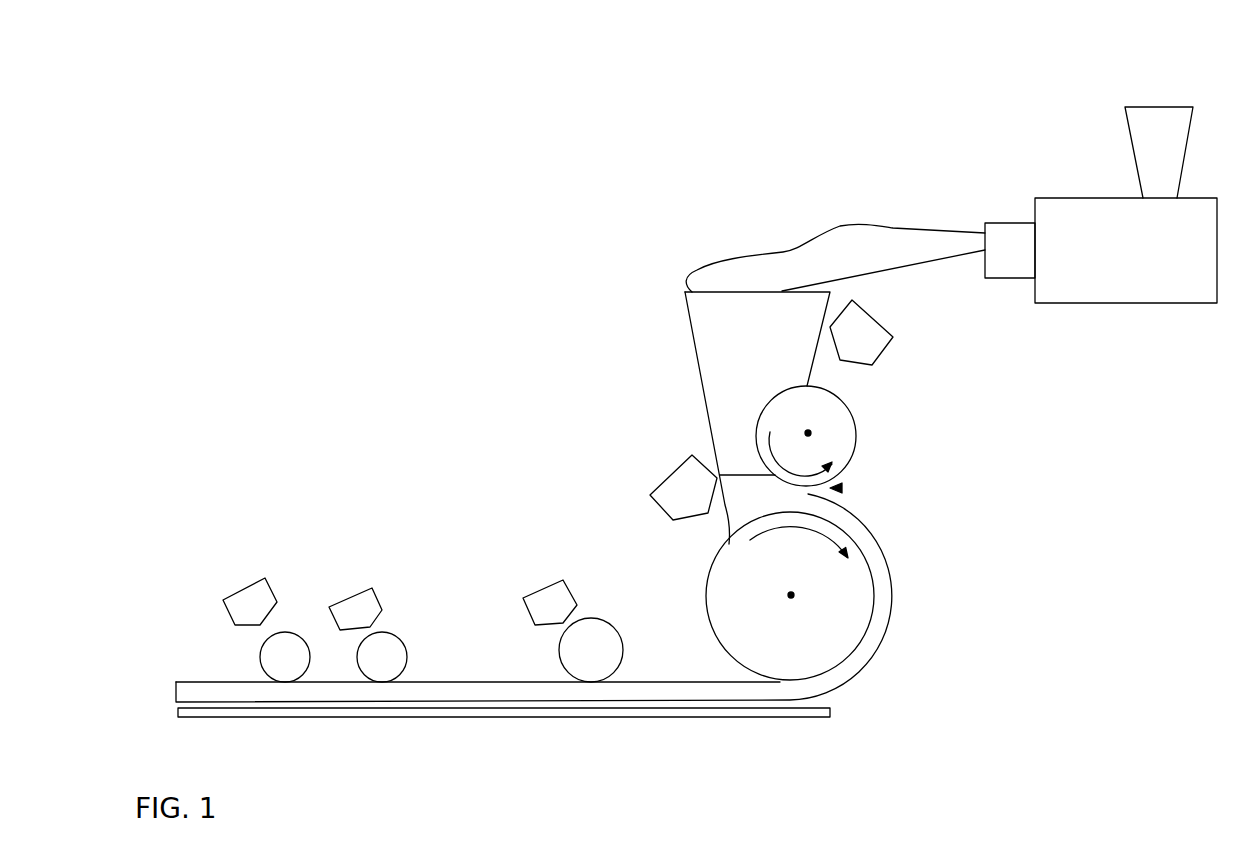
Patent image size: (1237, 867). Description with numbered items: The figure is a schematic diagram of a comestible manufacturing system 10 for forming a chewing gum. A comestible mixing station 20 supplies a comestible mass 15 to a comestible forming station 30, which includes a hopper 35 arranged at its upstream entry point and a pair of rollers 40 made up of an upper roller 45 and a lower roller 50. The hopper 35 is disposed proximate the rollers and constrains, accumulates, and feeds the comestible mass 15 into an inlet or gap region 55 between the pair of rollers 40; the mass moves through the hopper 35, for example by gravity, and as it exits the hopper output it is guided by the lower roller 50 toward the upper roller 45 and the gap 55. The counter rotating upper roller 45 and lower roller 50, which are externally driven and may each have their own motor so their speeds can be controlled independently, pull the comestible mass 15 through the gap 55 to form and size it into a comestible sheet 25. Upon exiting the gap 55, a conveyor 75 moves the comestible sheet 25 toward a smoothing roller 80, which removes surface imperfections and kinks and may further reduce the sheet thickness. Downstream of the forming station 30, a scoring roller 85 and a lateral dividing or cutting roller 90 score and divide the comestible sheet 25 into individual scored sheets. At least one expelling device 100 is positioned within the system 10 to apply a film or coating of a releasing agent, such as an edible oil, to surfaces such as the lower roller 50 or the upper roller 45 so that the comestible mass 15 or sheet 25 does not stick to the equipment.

The comestible manufacturing system 10 is at (280, 115).
The comestible mass 15 is at (862, 238).
The comestible mixing station 20 is at (1030, 152).
The comestible sheet 25 is at (882, 603).
The comestible forming station 30 is at (633, 281).
The hopper 35 is at (732, 336).
The pair of rollers 40 is at (940, 495).
The upper roller 45 is at (823, 427).
The lower roller 50 is at (746, 587).
The gap region 55 is at (842, 488).
The conveyor 75 is at (409, 712).
The smoothing roller 80 is at (603, 648).
The scoring roller 85 is at (380, 648).
The cutting roller 90 is at (280, 633).
The expelling device 100 is at (860, 340).